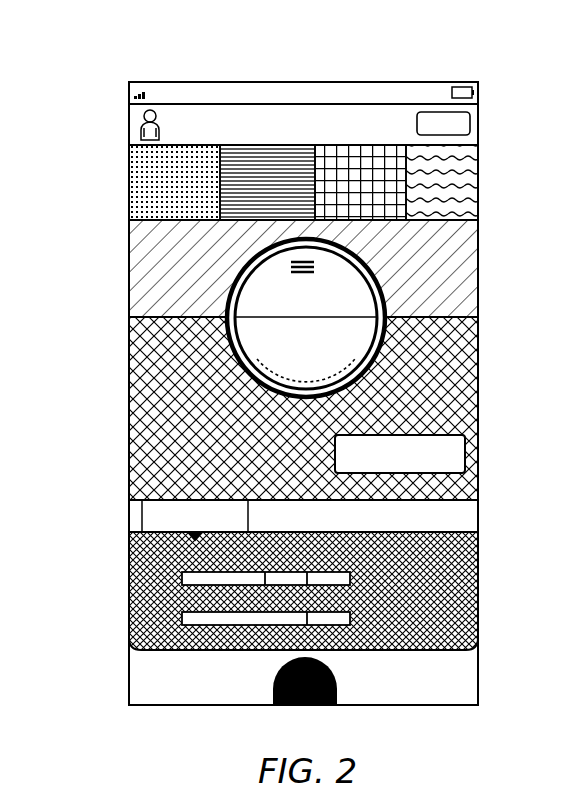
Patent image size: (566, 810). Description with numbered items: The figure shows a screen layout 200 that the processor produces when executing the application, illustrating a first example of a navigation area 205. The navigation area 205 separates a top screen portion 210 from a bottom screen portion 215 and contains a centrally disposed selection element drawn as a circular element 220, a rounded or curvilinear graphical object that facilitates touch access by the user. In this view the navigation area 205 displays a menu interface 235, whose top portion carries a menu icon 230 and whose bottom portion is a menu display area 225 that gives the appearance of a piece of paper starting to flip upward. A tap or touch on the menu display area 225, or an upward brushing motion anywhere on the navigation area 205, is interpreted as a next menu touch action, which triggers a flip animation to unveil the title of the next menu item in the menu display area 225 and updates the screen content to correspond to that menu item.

The screen layout 200 is at (157, 58).
The navigation area 205 is at (253, 307).
The top screen portion 210 is at (457, 255).
The bottom screen portion 215 is at (457, 347).
The circular element 220 is at (385, 372).
The menu display area 225 is at (302, 353).
The menu icon 230 is at (315, 268).
The menu interface 235 is at (340, 300).